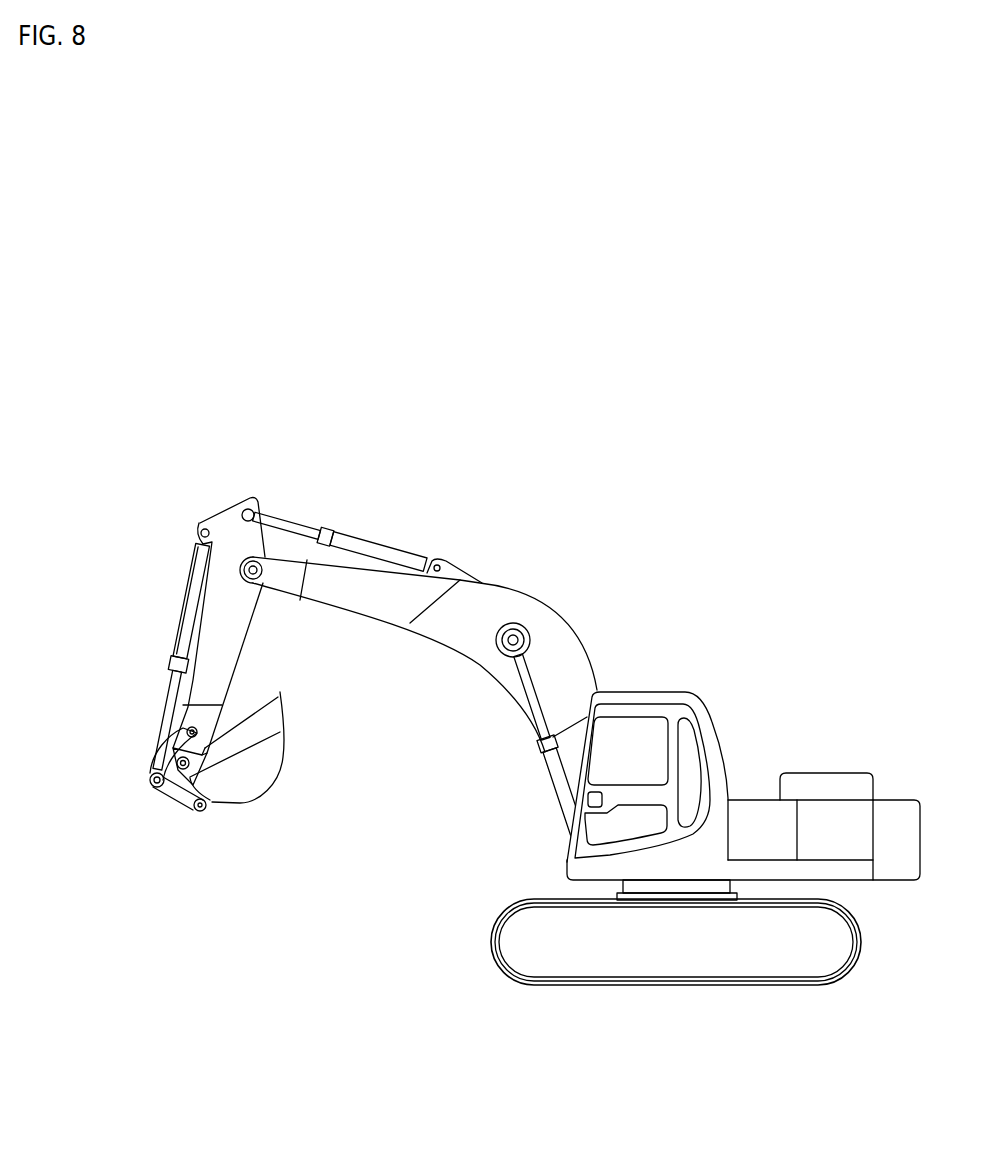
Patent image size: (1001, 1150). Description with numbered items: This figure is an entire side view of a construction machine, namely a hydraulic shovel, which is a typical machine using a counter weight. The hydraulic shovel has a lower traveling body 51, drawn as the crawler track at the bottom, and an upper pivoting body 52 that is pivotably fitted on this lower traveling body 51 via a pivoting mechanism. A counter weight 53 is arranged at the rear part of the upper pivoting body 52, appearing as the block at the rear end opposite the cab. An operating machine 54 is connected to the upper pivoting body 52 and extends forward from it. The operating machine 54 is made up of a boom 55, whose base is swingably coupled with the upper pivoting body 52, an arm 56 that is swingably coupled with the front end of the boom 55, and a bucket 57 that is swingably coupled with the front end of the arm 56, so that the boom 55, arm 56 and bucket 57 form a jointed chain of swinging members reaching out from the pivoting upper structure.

The lower traveling body 51 is at (500, 920).
The upper pivoting body 52 is at (752, 796).
The counter weight 53 is at (895, 808).
The operating machine 54 is at (405, 534).
The boom 55 is at (548, 648).
The arm 56 is at (228, 632).
The bucket 57 is at (273, 772).